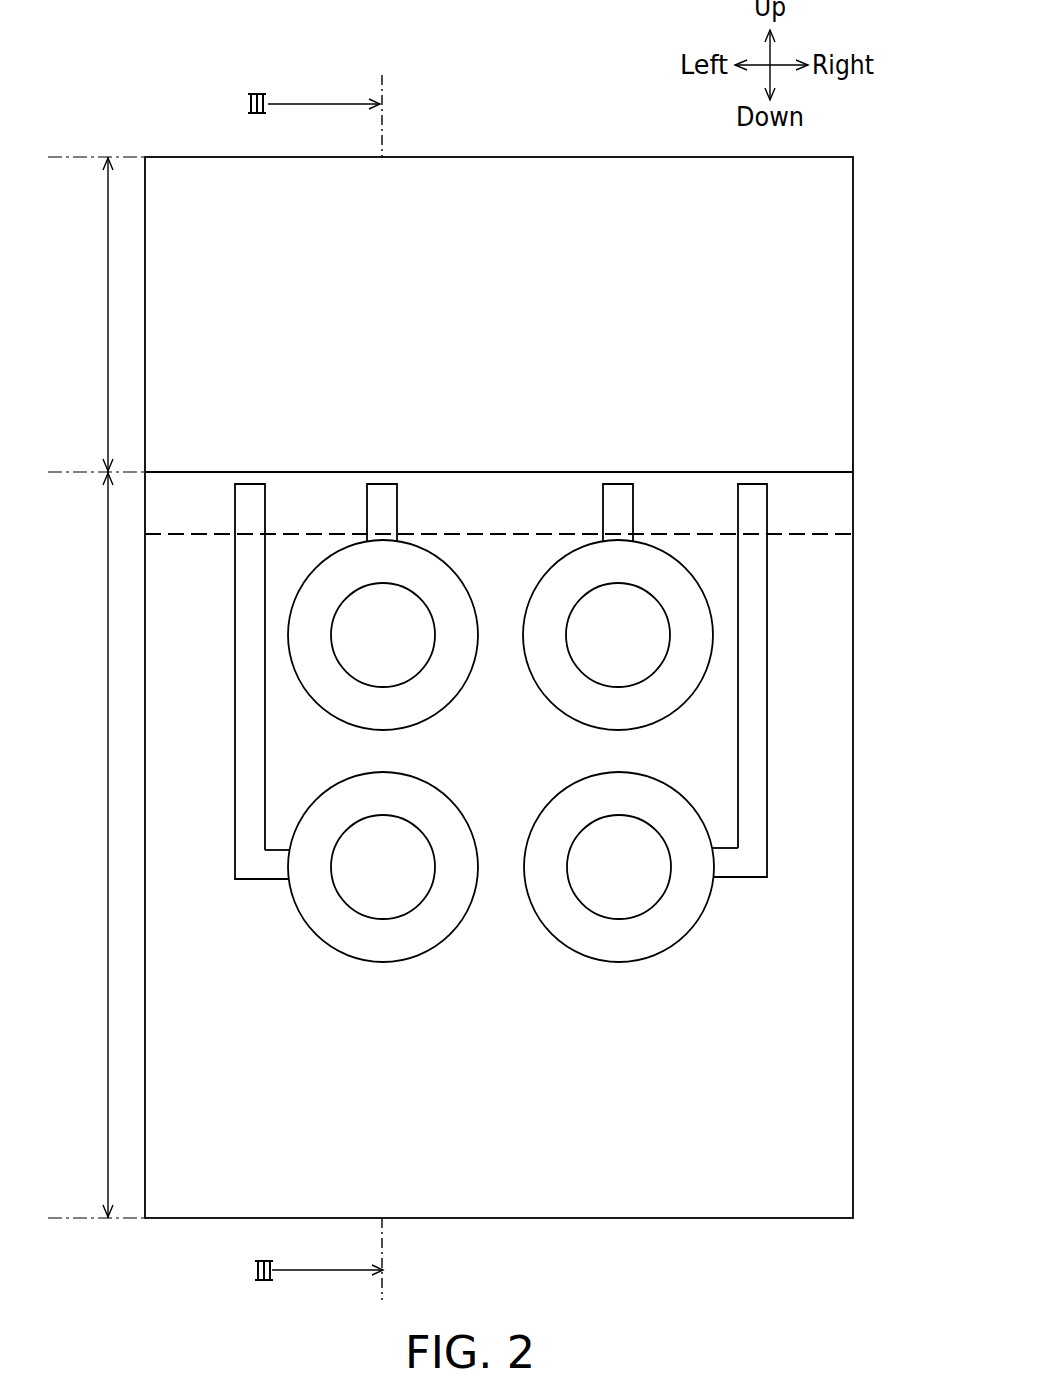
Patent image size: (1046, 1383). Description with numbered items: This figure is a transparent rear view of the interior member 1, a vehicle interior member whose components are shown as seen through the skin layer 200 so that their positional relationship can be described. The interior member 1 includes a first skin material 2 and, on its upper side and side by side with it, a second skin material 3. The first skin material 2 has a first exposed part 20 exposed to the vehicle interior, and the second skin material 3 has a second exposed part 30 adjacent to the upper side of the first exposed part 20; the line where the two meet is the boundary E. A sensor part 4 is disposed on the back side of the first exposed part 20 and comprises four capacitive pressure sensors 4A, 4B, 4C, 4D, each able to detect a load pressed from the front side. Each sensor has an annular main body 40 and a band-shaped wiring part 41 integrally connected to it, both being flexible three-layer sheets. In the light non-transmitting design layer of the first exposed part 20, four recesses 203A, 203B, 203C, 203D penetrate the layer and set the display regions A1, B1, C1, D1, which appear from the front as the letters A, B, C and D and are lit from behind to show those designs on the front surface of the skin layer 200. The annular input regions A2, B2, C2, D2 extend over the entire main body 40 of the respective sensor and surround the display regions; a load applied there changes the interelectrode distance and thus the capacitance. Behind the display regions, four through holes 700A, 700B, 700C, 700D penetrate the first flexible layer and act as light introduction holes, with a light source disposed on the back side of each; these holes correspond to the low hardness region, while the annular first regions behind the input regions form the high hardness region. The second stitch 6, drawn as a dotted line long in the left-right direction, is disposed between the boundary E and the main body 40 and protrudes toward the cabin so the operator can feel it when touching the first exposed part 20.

The interior member 1 is at (167, 92).
The first skin material 2 is at (108, 845).
The second skin material 3 is at (108, 290).
The sensor part 4 is at (248, 470).
The second stitch 6 is at (182, 532).
The first exposed part 20 is at (238, 1193).
The second exposed part 30 is at (237, 230).
The main body 40 is at (345, 705).
The wiring part 41 is at (382, 492).
The sensor 4A is at (310, 607).
The sensor 4B is at (690, 605).
The sensor 4C is at (300, 897).
The sensor 4D is at (690, 892).
The recess 203A is at (360, 646).
The recess 203B is at (643, 643).
The recess 203C is at (338, 880).
The recess 203D is at (637, 853).
The skin layer 200 is at (740, 1200).
The boundary E is at (100, 470).
The display region A1 is at (392, 610).
The through hole 700A is at (383, 592).
The input region A2 is at (352, 570).
The display region B1 is at (610, 607).
The through hole 700B is at (620, 592).
The input region B2 is at (648, 570).
The input region C2 is at (352, 930).
The through hole 700C is at (382, 910).
The display region C1 is at (390, 893).
The input region D2 is at (650, 930).
The through hole 700D is at (620, 908).
The display region D1 is at (612, 893).